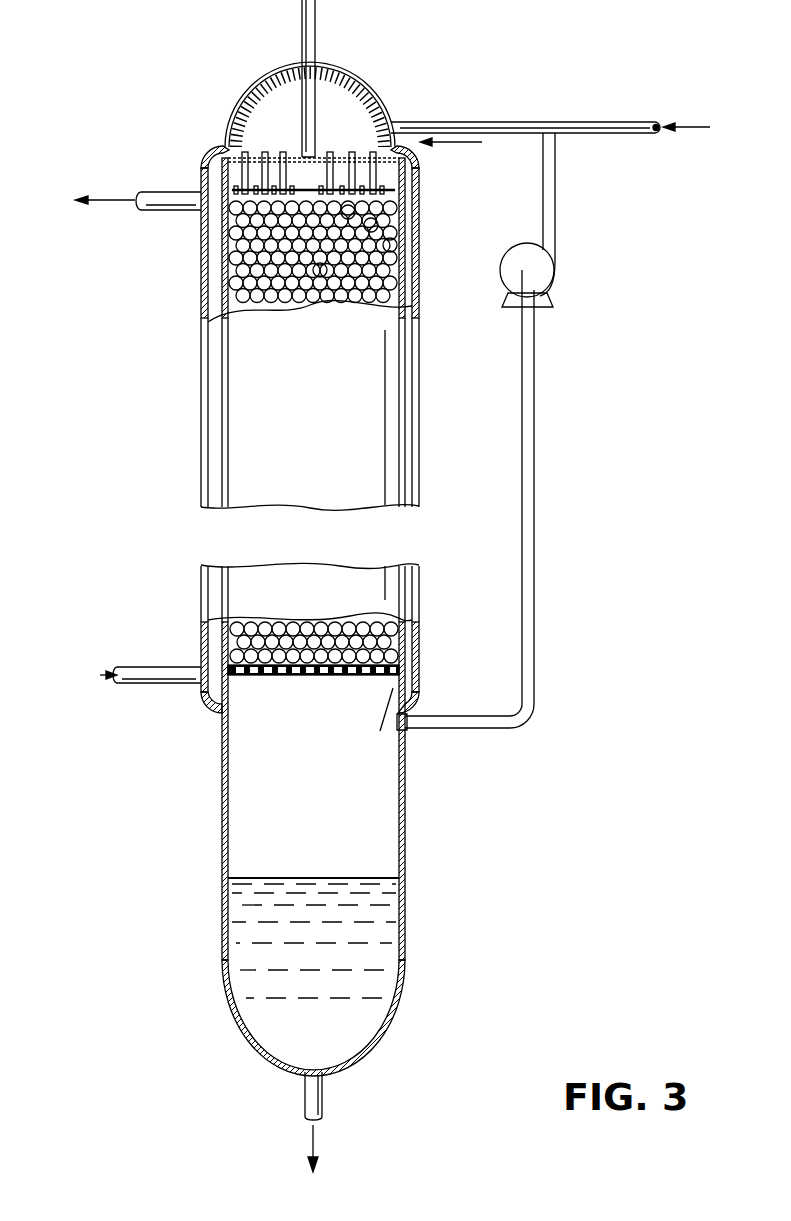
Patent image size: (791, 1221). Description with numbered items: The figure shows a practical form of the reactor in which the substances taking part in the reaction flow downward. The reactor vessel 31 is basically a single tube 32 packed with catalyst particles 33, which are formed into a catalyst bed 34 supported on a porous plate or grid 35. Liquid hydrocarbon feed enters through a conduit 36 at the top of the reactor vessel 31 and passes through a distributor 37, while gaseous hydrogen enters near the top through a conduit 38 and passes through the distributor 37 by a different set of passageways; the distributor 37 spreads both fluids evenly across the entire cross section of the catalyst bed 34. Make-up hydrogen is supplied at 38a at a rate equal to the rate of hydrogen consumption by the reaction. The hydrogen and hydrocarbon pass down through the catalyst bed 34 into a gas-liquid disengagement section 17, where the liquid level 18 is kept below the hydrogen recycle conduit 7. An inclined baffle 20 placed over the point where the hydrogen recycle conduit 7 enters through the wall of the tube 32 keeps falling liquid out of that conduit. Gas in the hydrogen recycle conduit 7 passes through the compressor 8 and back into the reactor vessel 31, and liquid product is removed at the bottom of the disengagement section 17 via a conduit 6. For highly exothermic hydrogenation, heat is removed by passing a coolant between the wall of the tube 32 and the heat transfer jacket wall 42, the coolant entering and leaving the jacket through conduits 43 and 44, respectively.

The conduit 6 is at (331, 1100).
The hydrogen recycle conduit 7 is at (535, 672).
The compressor 8 is at (556, 280).
The gas-liquid disengagement section 17 is at (370, 847).
The liquid level 18 is at (278, 878).
The inclined baffle 20 is at (362, 697).
The reactor vessel 31 is at (220, 403).
The tube 32 is at (228, 238).
The catalyst particles 33 is at (375, 228).
The catalyst bed 34 is at (333, 268).
The porous plate or grid 35 is at (300, 677).
The conduit 36 is at (318, 54).
The distributor 37 is at (279, 157).
The conduit 38 is at (412, 120).
The make-up hydrogen supply 38a is at (613, 124).
The heat transfer jacket wall 42 is at (420, 283).
The conduit 43 is at (178, 667).
The conduit 44 is at (193, 185).